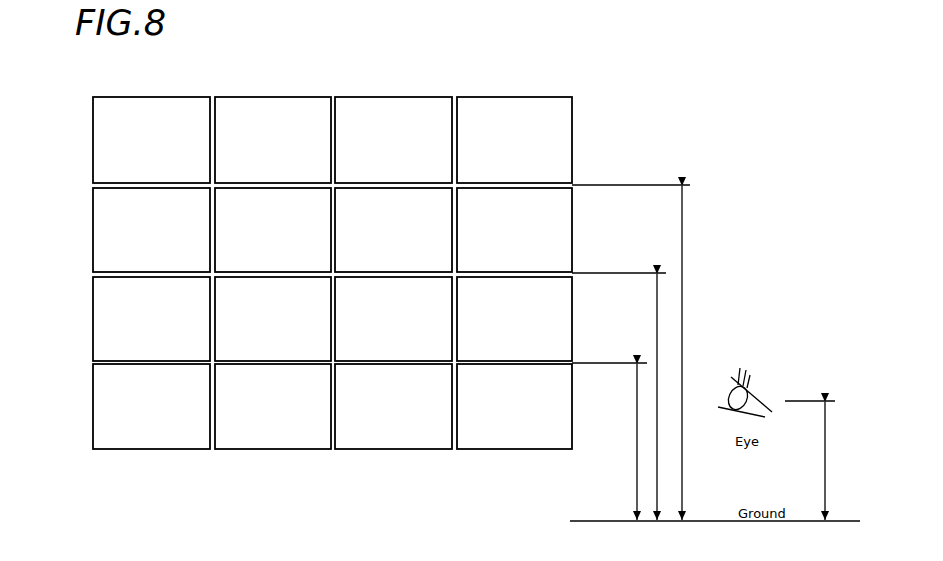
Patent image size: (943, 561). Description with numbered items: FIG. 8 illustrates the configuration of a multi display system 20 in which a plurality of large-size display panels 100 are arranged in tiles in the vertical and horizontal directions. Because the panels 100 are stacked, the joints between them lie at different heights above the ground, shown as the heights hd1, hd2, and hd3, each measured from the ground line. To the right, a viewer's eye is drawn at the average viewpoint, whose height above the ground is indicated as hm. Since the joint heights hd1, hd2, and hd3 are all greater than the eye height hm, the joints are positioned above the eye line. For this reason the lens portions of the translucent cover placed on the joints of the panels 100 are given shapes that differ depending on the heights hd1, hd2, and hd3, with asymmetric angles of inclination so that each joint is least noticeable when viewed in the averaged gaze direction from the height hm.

The display device 20 is at (90, 185).
The panel 100 is at (165, 231).
The height of joint hd1 is at (609, 433).
The height of joint hd2 is at (619, 388).
The height of joint hd3 is at (631, 343).
The height of average viewpoint hm is at (817, 460).